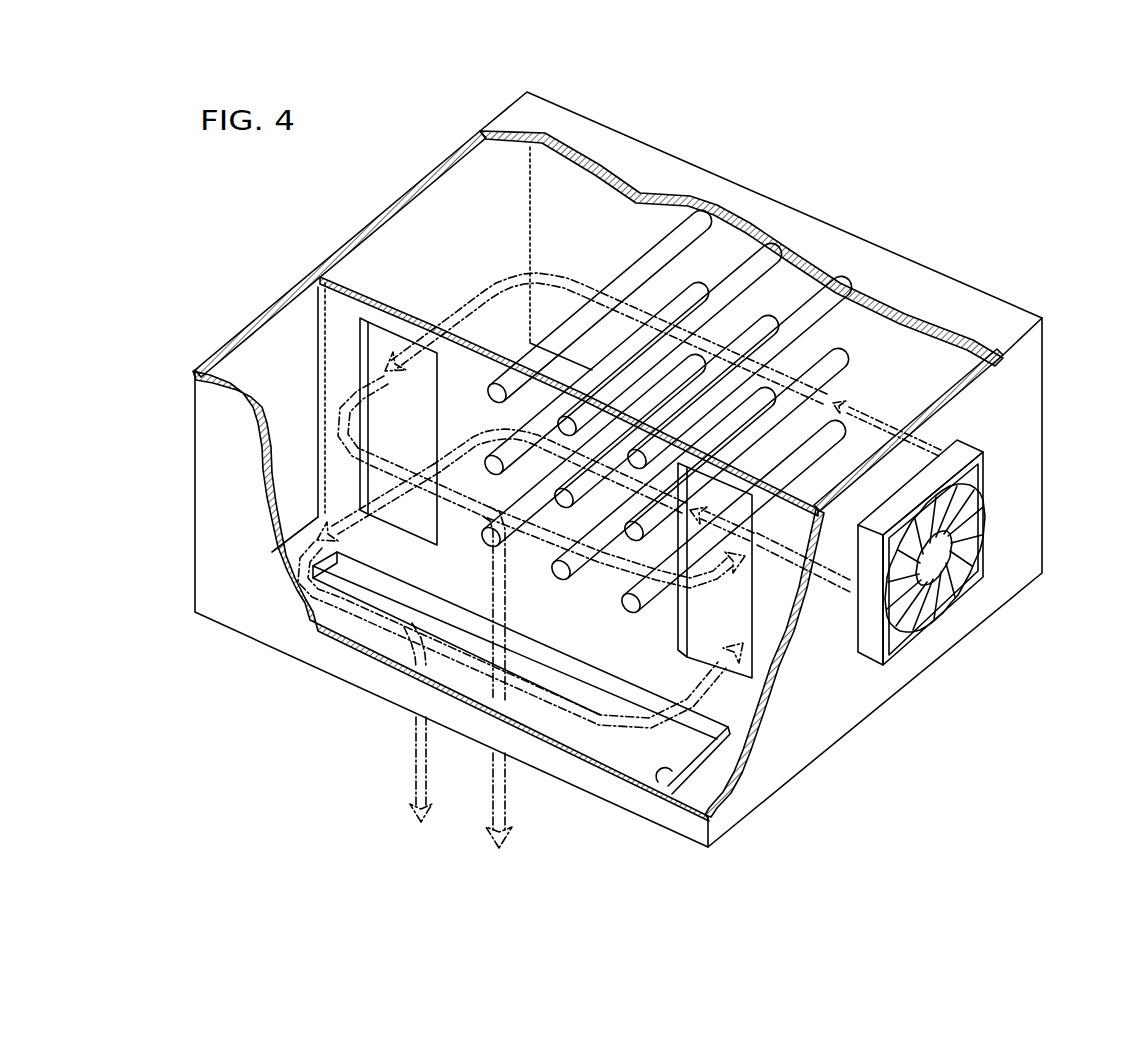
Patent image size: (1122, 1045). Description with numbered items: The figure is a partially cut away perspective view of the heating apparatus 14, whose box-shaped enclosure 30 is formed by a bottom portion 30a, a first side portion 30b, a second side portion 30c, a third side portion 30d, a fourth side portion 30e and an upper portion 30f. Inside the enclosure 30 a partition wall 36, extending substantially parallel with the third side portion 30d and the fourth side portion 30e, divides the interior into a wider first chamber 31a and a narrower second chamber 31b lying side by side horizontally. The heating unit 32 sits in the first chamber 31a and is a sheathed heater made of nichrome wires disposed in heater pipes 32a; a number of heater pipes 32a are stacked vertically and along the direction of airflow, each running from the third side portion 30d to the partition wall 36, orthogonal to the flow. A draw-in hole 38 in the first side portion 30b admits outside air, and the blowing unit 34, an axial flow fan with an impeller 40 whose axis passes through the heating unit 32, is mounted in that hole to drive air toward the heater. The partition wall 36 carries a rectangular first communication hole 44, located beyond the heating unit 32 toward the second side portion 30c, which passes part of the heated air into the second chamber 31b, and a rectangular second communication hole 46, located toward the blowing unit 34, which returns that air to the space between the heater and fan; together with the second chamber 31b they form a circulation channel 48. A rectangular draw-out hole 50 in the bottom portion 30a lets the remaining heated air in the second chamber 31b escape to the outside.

The heating apparatus 14 is at (266, 185).
The enclosure 30 is at (845, 196).
The bottom portion 30a is at (707, 770).
The first side portion 30b is at (1020, 545).
The second side portion 30c is at (385, 212).
The third side portion 30d is at (898, 333).
The fourth side portion 30e is at (283, 623).
The upper portion 30f is at (661, 170).
The first chamber 31a is at (427, 225).
The second chamber 31b is at (260, 368).
The heating unit 32 is at (665, 406).
The heater pipe 32a is at (640, 273).
The blowing unit 34 is at (957, 585).
The partition wall 36 is at (346, 310).
The draw-in hole 38 is at (887, 643).
The impeller 40 is at (937, 565).
The first communication hole 44 is at (365, 358).
The second communication hole 46 is at (678, 623).
The circulation channel 48 is at (300, 328).
The draw-out hole 50 is at (665, 770).